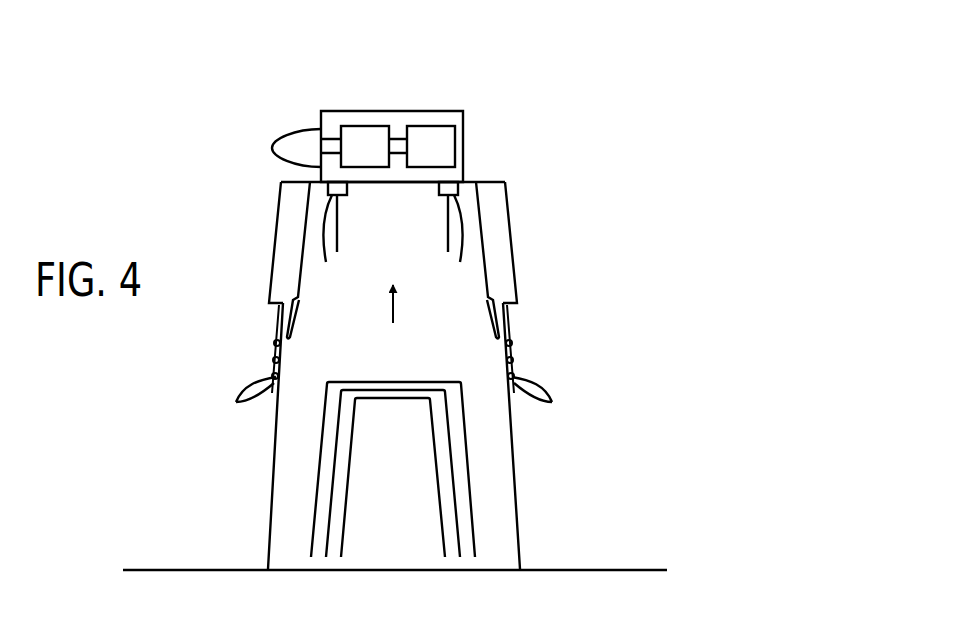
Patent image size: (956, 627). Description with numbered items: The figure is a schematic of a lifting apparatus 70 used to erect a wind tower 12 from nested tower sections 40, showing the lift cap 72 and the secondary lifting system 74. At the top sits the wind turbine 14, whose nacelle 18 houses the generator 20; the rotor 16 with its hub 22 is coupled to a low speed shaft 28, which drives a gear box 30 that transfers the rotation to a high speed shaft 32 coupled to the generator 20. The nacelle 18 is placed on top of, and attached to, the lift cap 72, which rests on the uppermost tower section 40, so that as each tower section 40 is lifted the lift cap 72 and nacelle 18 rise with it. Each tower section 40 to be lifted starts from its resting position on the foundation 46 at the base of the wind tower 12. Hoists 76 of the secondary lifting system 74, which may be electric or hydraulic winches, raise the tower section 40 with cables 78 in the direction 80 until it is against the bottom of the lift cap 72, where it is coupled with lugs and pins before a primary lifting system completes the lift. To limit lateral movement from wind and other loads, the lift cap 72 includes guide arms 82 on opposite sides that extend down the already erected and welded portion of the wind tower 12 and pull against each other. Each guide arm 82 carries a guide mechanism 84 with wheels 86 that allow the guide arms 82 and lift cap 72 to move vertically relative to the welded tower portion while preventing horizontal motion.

The wind tower 12 is at (595, 250).
The wind turbine 14 is at (472, 132).
The rotor 16 is at (263, 142).
The nacelle 18 is at (428, 108).
The generator 20 is at (432, 125).
The hub 22 is at (292, 135).
The low speed shaft 28 is at (330, 138).
The gear box 30 is at (360, 126).
The high speed shaft 32 is at (402, 139).
The tower section 40 is at (390, 397).
The foundation 46 is at (183, 580).
The lifting apparatus 70 is at (215, 178).
The lift cap 72 is at (475, 178).
The secondary lifting system 74 is at (432, 199).
The hoists 76 is at (395, 242).
The cables 78 is at (448, 229).
The direction 80 is at (393, 308).
The guide arms 82 is at (275, 244).
The guide mechanism 84 is at (261, 357).
The wheels 86 is at (394, 404).